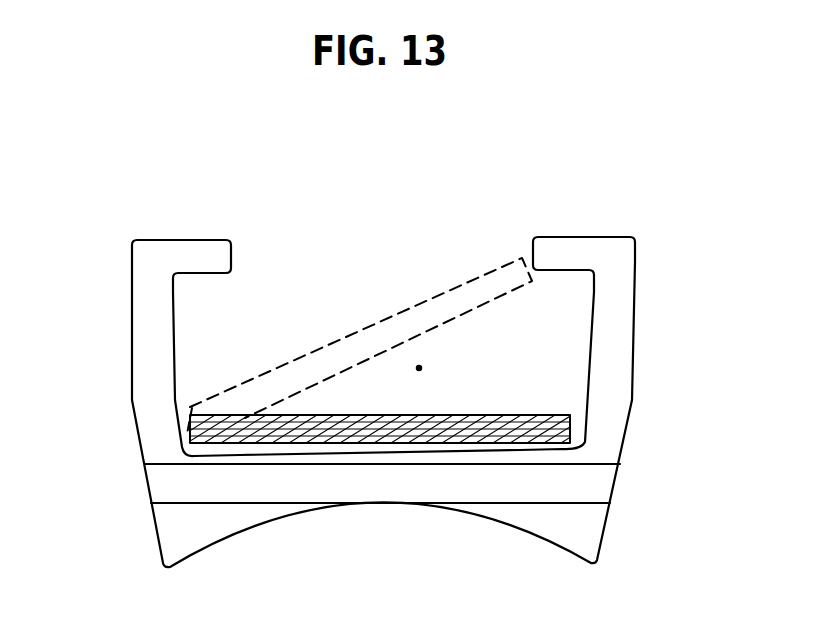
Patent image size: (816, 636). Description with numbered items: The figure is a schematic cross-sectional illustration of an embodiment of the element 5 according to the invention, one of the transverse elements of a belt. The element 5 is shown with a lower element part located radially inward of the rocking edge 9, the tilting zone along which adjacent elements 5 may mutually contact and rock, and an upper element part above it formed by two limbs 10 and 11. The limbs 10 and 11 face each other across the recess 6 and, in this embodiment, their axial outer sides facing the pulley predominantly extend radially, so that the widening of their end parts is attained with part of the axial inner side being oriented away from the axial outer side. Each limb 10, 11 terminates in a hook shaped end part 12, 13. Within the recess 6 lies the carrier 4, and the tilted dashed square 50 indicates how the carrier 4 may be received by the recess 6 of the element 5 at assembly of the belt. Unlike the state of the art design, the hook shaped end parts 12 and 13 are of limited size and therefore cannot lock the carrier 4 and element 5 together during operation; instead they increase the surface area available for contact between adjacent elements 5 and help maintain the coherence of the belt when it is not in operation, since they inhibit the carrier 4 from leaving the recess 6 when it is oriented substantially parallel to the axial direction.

The element 5 is at (93, 281).
The carrier 4 is at (468, 404).
The recess 6 is at (419, 368).
The rocking edge 9 is at (157, 466).
The limb 10 is at (139, 265).
The limb 11 is at (620, 318).
The hook shaped end part 12 is at (197, 252).
The hook shaped end part 13 is at (565, 247).
The square 50 is at (268, 362).